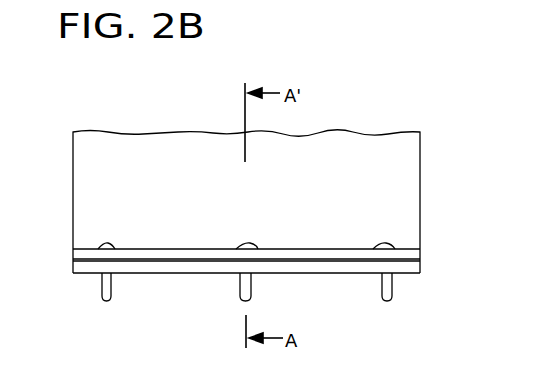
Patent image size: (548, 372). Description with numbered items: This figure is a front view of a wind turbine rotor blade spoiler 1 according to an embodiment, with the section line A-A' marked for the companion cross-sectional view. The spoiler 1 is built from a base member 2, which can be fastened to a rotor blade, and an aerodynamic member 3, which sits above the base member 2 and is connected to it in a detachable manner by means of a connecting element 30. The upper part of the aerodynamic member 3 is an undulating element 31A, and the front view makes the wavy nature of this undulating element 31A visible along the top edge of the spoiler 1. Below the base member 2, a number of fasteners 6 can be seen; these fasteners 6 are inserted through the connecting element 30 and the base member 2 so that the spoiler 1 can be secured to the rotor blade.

The wind turbine rotor blade spoiler 1 is at (272, 186).
The base member 2 is at (422, 268).
The aerodynamic member 3 is at (422, 160).
The fastener 6 is at (380, 289).
The connecting element 30 is at (422, 254).
The undulating element 31A is at (159, 131).